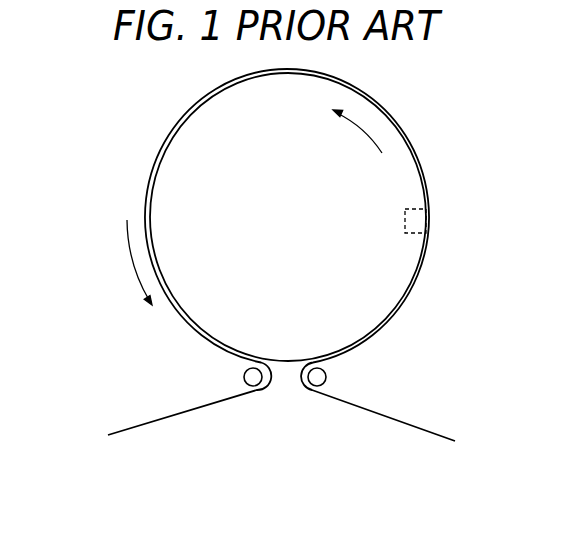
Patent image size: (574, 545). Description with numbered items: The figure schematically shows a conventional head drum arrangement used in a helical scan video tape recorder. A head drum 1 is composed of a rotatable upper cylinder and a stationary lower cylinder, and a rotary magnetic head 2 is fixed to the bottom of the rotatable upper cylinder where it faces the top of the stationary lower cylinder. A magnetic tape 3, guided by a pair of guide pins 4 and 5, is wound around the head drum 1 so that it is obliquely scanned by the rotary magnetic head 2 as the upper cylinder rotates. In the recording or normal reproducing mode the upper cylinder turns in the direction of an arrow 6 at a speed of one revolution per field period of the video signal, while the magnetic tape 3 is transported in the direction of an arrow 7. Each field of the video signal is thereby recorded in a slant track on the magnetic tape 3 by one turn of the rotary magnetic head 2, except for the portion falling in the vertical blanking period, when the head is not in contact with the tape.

The head drum 1 is at (183, 122).
The rotary magnetic head 2 is at (405, 221).
The magnetic tape 3 is at (227, 403).
The guide pin 4 is at (244, 377).
The guide pin 5 is at (327, 378).
The arrow 6 is at (355, 127).
The arrow 7 is at (131, 260).